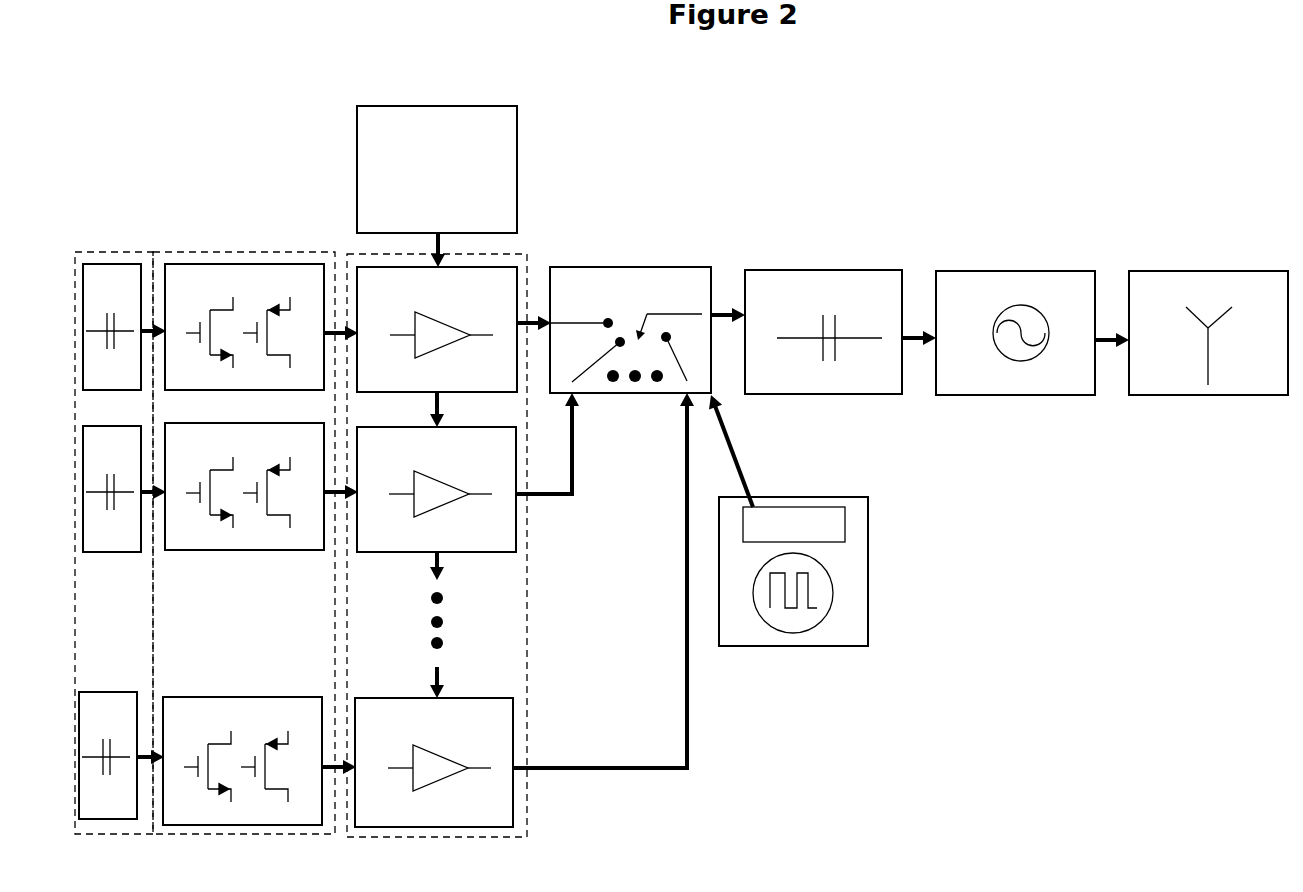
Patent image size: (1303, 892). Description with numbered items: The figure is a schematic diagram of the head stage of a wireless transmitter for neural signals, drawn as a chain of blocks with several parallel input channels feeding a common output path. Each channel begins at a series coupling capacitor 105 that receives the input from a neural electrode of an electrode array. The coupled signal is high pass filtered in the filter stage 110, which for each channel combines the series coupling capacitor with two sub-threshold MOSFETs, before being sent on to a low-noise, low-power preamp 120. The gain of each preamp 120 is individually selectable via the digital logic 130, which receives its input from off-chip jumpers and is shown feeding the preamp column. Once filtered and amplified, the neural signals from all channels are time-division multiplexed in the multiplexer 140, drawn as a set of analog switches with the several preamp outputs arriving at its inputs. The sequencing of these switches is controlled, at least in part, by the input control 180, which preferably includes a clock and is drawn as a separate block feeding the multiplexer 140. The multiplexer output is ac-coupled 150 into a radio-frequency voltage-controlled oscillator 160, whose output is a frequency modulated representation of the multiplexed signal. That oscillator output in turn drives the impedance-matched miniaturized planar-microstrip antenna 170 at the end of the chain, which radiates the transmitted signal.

The input coupling capacitors 105 is at (109, 275).
The high pass filter stage 110 is at (210, 252).
The low-noise, low-power preamp 120 is at (358, 252).
The digital logic 130 is at (518, 185).
The multiplexer (MUX) 140 is at (628, 267).
The ac-coupling 150 is at (823, 268).
The radio-frequency voltage-controlled oscillator (VCO) 160 is at (1015, 270).
The impedance-matched miniaturized planar-microstrip antenna 170 is at (1208, 270).
The input control 180 is at (856, 531).